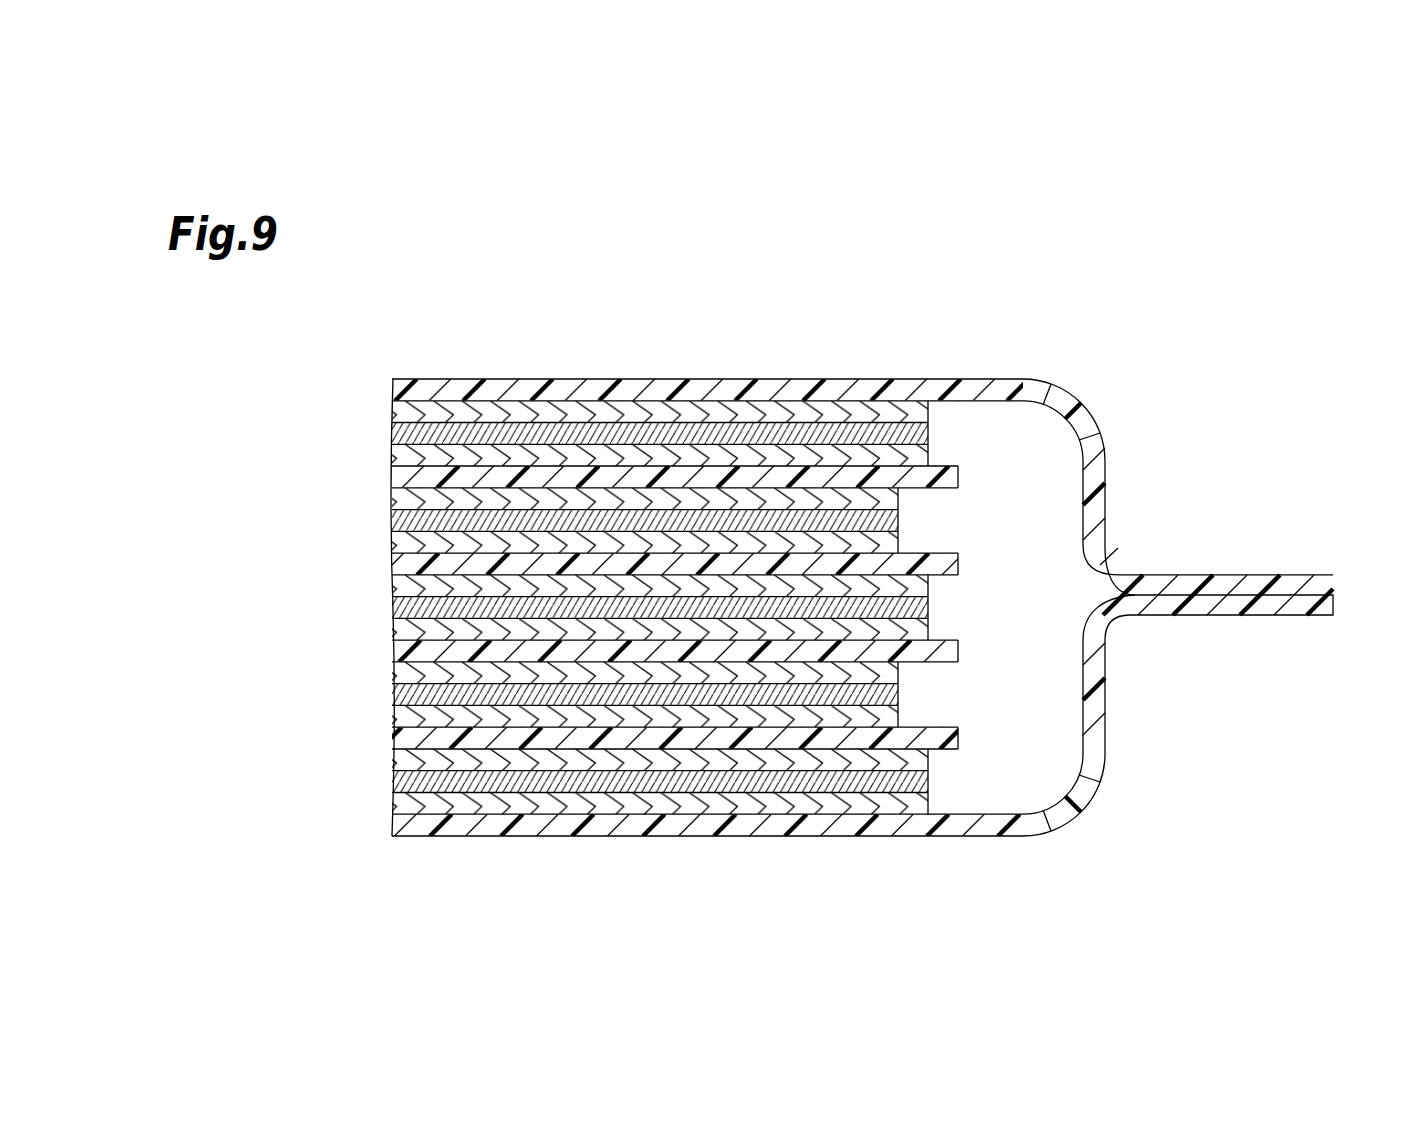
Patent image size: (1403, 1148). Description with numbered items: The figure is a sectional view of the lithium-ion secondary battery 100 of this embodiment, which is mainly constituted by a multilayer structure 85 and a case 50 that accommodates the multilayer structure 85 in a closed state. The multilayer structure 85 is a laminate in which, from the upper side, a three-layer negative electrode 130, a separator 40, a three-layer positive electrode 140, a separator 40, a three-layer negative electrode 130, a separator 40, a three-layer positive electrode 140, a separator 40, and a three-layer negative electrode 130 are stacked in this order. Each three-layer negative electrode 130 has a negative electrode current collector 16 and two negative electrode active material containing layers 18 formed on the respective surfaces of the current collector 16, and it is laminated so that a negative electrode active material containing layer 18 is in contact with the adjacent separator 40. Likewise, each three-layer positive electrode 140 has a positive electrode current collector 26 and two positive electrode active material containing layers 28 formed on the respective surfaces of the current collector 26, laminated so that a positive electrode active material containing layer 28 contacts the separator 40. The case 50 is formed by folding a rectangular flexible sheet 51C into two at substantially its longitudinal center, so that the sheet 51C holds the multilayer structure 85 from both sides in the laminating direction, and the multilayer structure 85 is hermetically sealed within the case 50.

The lithium-ion secondary battery 100 is at (937, 246).
The case 50 is at (917, 380).
The rectangular flexible sheet 51C is at (522, 383).
The multilayer structure 85 is at (228, 410).
The three-layer negative electrode 130 is at (292, 400).
The three-layer positive electrode 140 is at (292, 487).
The negative electrode active material containing layer 18 is at (392, 412).
The negative electrode current collector 16 is at (392, 433).
The positive electrode active material containing layer 28 is at (392, 499).
The positive electrode current collector 26 is at (392, 520).
The separator 40 is at (392, 477).